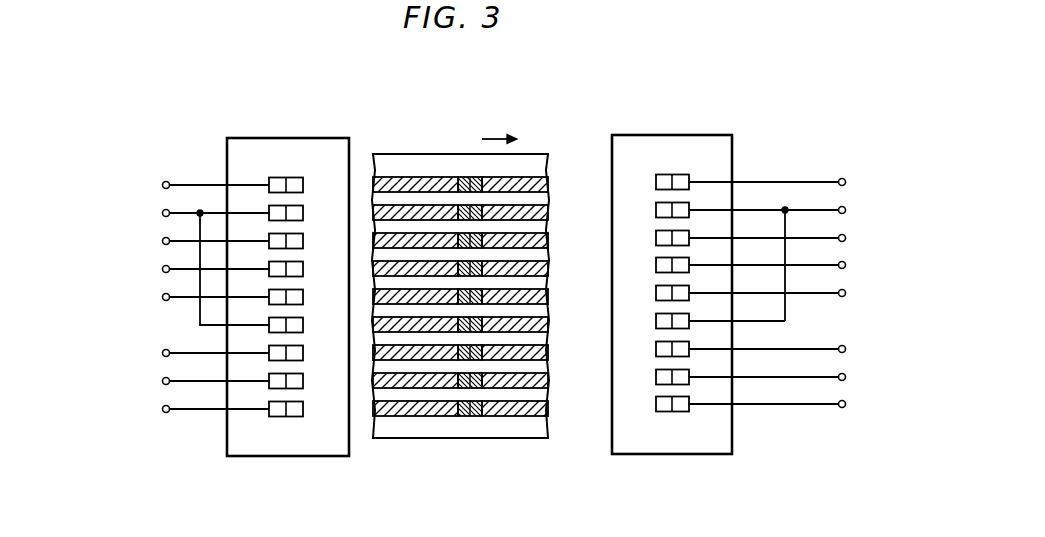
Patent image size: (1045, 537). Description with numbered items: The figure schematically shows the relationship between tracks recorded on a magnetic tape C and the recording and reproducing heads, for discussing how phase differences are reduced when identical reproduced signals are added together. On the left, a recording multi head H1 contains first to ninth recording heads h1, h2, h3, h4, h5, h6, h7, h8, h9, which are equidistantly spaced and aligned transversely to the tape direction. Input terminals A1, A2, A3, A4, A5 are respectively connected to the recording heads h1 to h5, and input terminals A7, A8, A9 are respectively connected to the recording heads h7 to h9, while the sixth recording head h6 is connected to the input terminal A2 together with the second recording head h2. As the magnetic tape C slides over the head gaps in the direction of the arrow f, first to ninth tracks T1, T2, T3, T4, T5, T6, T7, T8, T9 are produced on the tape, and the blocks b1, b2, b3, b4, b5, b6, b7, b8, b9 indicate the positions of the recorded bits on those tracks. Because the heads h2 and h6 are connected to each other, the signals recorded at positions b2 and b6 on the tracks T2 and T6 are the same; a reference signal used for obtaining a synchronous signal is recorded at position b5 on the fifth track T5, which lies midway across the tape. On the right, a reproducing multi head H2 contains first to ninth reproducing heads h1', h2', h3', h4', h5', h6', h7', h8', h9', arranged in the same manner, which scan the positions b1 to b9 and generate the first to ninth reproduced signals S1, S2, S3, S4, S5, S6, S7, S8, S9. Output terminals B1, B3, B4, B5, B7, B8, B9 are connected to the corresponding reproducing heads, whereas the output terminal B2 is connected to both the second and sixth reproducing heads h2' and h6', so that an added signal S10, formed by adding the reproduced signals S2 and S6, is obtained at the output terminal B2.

The recording multi head H1 is at (273, 137).
The reproducing multi head H2 is at (665, 134).
The magnetic tape C is at (537, 157).
The arrow indicating tape direction f is at (495, 138).
The input terminal A1 is at (160, 185).
The input terminal A2 is at (160, 213).
The input terminal A3 is at (160, 241).
The input terminal A4 is at (160, 269).
The input terminal A5 is at (160, 297).
The input terminal A7 is at (160, 353).
The input terminal A8 is at (160, 381).
The input terminal A9 is at (160, 409).
The first recording head h1 is at (305, 186).
The second recording head h2 is at (305, 214).
The third recording head h3 is at (305, 242).
The fourth recording head h4 is at (305, 270).
The fifth recording head h5 is at (305, 298).
The sixth recording head h6 is at (305, 326).
The seventh recording head h7 is at (305, 354).
The eighth recording head h8 is at (305, 382).
The ninth recording head h9 is at (305, 410).
The first track T1 is at (548, 185).
The second track T2 is at (548, 213).
The third track T3 is at (548, 241).
The fourth track T4 is at (548, 269).
The fifth track T5 is at (548, 297).
The sixth track T6 is at (548, 325).
The seventh track T7 is at (548, 353).
The eighth track T8 is at (548, 381).
The ninth track T9 is at (548, 409).
The recorded bit position b1 is at (500, 170).
The recorded bit position b2 is at (458, 207).
The recorded bit position b3 is at (459, 240).
The recorded bit position b4 is at (456, 268).
The recorded bit position b5 is at (458, 298).
The recorded bit position b6 is at (483, 322).
The recorded bit position b7 is at (481, 352).
The recorded bit position b8 is at (484, 378).
The recorded bit position b9 is at (468, 410).
The first reproducing head h1' is at (651, 183).
The second reproducing head h2' is at (651, 211).
The third reproducing head h3' is at (651, 239).
The fourth reproducing head h4' is at (651, 266).
The fifth reproducing head h5' is at (651, 294).
The sixth reproducing head h6' is at (651, 322).
The seventh reproducing head h7' is at (651, 350).
The eighth reproducing head h8' is at (651, 378).
The ninth reproducing head h9' is at (651, 405).
The first reproduced signal S1 is at (750, 167).
The second reproduced signal S2 is at (750, 195).
The third reproduced signal S3 is at (750, 223).
The fourth reproduced signal S4 is at (750, 250).
The fifth reproduced signal S5 is at (750, 278).
The sixth reproduced signal S6 is at (750, 306).
The seventh reproduced signal S7 is at (750, 334).
The eighth reproduced signal S8 is at (750, 362).
The ninth reproduced signal S9 is at (750, 389).
The added signal S10 is at (833, 209).
The output terminal B1 is at (846, 182).
The output terminal B2 is at (846, 210).
The output terminal B3 is at (846, 238).
The output terminal B4 is at (846, 265).
The output terminal B5 is at (846, 293).
The output terminal B7 is at (846, 349).
The output terminal B8 is at (846, 377).
The output terminal B9 is at (846, 404).